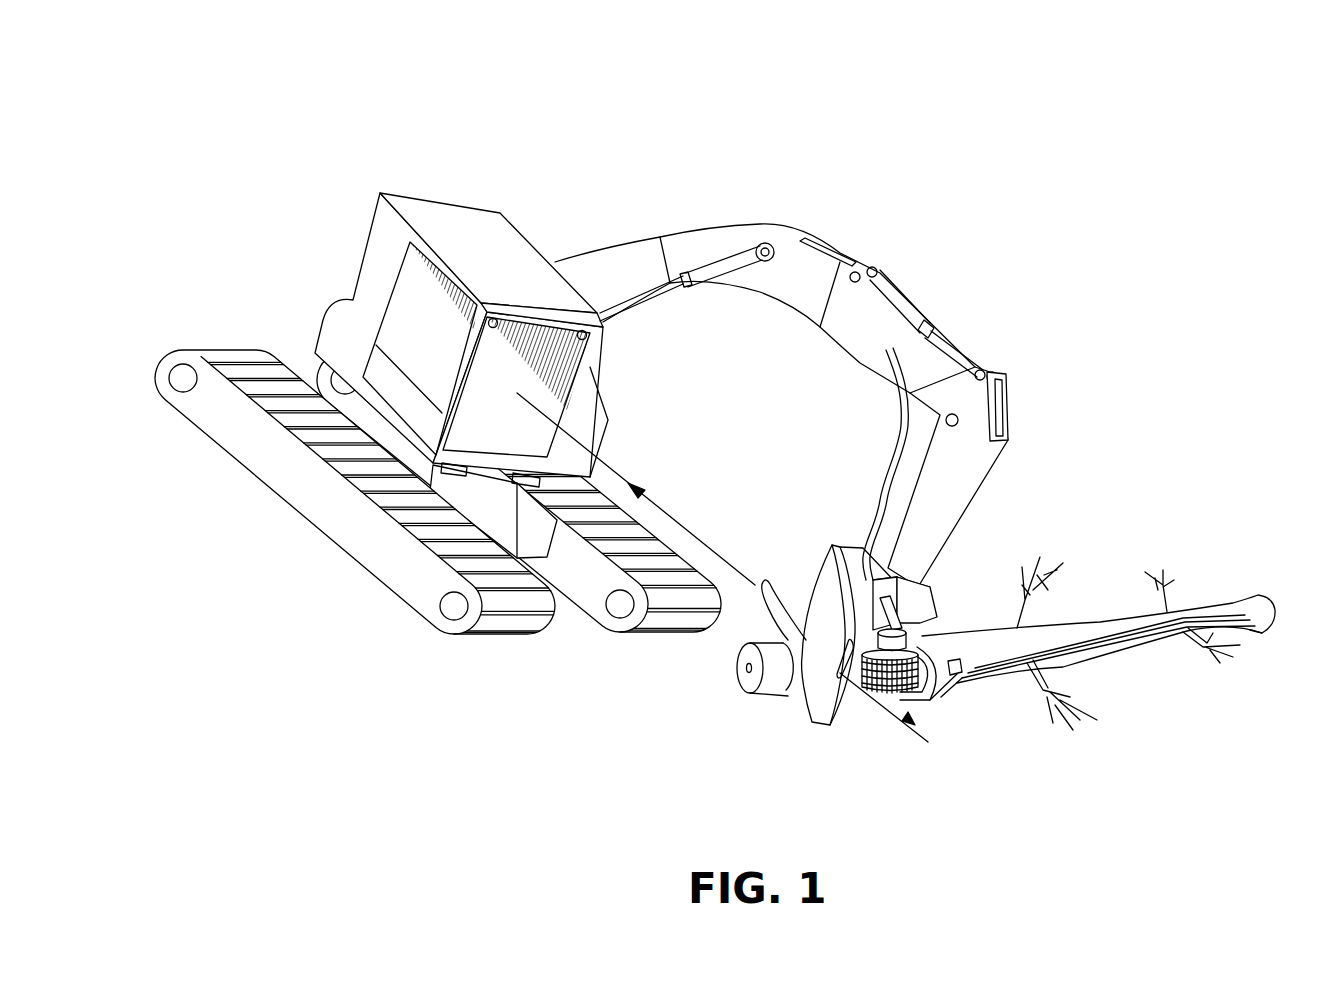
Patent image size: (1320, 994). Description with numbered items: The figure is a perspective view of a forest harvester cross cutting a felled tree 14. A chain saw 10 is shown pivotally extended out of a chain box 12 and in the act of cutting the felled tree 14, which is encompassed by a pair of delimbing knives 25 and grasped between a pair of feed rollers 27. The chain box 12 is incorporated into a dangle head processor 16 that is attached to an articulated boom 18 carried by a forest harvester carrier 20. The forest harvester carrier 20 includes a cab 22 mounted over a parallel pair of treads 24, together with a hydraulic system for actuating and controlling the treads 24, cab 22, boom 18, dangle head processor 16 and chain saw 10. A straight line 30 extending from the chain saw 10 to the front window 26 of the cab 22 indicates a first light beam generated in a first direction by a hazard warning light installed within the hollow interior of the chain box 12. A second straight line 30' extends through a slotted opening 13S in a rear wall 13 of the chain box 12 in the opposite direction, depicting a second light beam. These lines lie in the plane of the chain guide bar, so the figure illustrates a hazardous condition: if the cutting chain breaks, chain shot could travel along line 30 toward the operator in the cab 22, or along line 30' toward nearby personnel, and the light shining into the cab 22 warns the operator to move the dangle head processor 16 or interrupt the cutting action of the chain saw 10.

The chain saw 10 is at (330, 73).
The forest harvester carrier 20 is at (415, 160).
The cab 22 is at (364, 270).
The treads 24 is at (258, 364).
The front window 26 is at (555, 393).
The articulated boom 18 is at (782, 290).
The dangle head processor 16 is at (860, 490).
The chain box 12 is at (830, 560).
The rear wall 13 is at (822, 707).
The slotted opening 13S is at (843, 640).
The feed rollers 27 is at (920, 593).
The delimbing knives 25 is at (947, 683).
The straight line 30 is at (636, 489).
The second straight line 30' is at (871, 733).
The felled tree 14 is at (1123, 643).